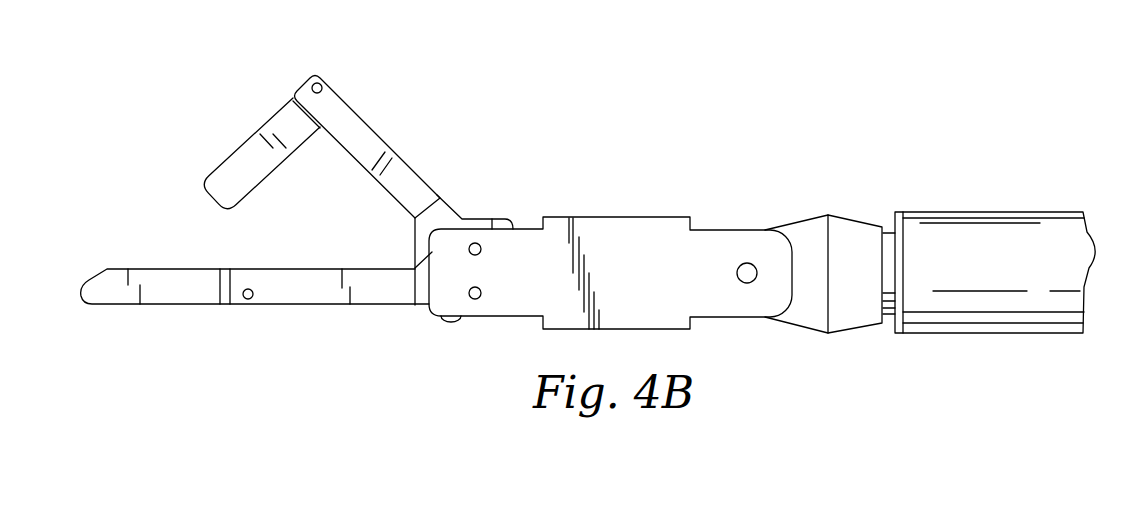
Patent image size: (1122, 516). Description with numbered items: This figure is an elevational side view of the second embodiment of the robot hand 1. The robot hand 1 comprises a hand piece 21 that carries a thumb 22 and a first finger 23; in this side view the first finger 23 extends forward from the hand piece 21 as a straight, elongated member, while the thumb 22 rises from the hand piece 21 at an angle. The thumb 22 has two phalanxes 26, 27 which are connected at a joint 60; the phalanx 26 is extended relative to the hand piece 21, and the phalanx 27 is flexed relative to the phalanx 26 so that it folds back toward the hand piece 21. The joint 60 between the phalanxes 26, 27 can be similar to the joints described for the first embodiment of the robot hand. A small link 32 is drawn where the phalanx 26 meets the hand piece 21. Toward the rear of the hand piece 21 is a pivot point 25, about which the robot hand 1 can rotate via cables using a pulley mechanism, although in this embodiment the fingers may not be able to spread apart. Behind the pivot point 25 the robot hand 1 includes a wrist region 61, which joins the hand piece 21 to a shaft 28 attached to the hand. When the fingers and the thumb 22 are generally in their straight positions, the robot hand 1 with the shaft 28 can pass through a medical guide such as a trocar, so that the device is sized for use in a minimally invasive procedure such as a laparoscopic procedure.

The robot hand 1 is at (620, 150).
The hand piece 21 is at (654, 227).
The thumb 22 is at (296, 77).
The first finger 23 is at (318, 308).
The pivot point 25 is at (750, 263).
The phalanx 26 is at (373, 136).
The phalanx 27 is at (245, 147).
The shaft 28 is at (980, 212).
The link 32 is at (453, 206).
The joint 60 is at (337, 62).
The wrist region 61 is at (852, 332).